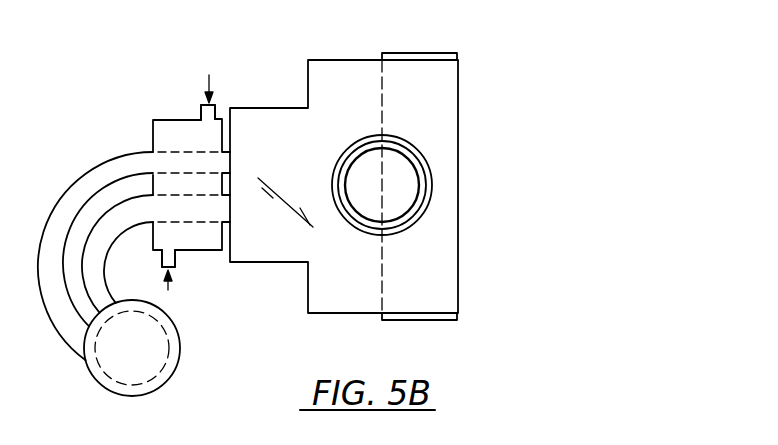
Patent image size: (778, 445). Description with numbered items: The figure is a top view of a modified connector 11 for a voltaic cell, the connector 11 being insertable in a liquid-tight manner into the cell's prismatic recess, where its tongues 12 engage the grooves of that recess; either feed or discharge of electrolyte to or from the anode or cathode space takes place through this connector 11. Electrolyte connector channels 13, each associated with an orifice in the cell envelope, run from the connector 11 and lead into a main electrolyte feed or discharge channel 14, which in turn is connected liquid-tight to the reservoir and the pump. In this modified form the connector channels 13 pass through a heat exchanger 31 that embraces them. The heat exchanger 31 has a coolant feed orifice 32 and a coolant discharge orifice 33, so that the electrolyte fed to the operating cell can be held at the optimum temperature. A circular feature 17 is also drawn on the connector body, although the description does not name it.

The connector 11 is at (350, 60).
The tongues 12 is at (437, 53).
The connector channels 13 is at (113, 208).
The main electrolyte feed or discharge channel 14 is at (122, 377).
The circular port 17 is at (413, 190).
The heat exchanger 31 is at (165, 127).
The coolant feed orifice 32 is at (217, 103).
The coolant discharge orifice 33 is at (177, 268).